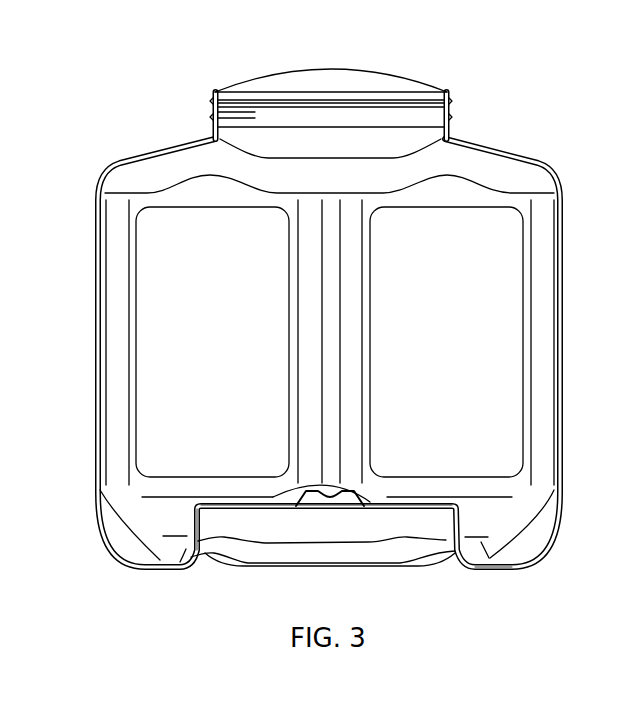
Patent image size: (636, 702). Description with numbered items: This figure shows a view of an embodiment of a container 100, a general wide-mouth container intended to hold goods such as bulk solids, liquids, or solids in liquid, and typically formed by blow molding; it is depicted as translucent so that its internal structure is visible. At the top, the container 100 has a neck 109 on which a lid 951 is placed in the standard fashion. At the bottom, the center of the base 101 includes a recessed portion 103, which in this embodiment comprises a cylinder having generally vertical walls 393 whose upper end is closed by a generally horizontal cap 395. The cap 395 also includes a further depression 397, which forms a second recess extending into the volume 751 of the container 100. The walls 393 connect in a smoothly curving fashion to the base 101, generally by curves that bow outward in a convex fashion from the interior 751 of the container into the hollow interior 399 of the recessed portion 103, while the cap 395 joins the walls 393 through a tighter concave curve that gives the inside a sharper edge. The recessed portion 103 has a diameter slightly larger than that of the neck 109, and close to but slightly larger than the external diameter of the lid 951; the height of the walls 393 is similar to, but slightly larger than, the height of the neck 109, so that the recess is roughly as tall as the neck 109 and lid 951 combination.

The container 100 is at (95, 282).
The base 101 is at (492, 570).
The recessed portion 103 is at (243, 565).
The neck 109 is at (450, 103).
The walls 393 is at (197, 525).
The cap 395 is at (402, 505).
The further depression 397 is at (313, 488).
The hollow interior 399 is at (552, 525).
The volume 751 is at (155, 393).
The lid 951 is at (368, 70).